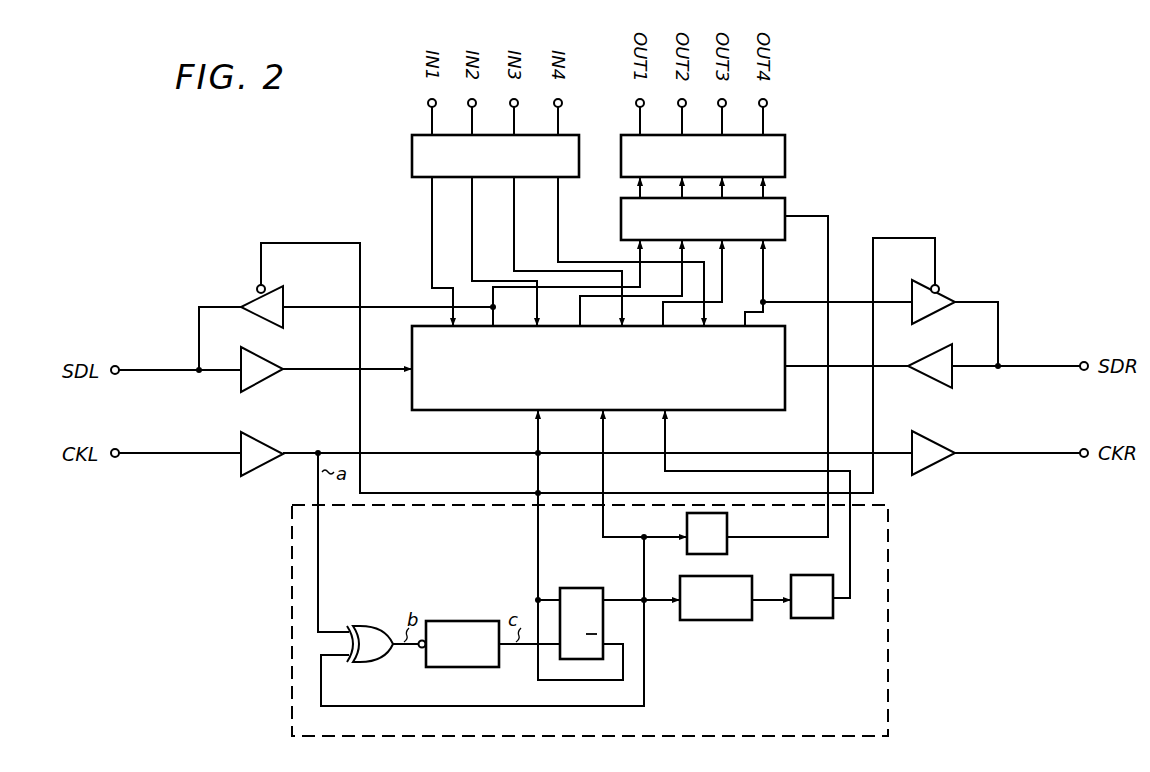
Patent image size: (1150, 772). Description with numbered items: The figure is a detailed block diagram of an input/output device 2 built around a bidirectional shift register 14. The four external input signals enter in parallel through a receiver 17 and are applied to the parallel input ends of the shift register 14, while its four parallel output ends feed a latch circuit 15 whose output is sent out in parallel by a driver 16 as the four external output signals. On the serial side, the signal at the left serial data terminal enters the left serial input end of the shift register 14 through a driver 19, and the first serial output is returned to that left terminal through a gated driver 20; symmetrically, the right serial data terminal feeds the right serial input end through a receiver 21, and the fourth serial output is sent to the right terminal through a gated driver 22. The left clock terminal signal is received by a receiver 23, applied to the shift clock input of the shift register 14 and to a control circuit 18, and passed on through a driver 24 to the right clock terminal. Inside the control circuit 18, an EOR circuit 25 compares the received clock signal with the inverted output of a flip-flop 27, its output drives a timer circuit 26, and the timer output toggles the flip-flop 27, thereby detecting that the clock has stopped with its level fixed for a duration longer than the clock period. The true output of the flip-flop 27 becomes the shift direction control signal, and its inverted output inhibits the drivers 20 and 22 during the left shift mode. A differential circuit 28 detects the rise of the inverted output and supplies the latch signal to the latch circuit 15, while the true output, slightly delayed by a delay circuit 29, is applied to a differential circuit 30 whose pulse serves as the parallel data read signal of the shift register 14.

The input/output device 2 is at (361, 200).
The bidirectional shift register 14 is at (782, 405).
The latch circuit 15 is at (785, 206).
The driver 16 is at (785, 144).
The receiver 17 is at (412, 145).
The control circuit 18 is at (292, 572).
The driver 19 is at (273, 378).
The driver with gates 20 is at (284, 301).
The receiver 21 is at (953, 372).
The driver with gates 22 is at (942, 289).
The receiver 23 is at (262, 447).
The driver 24 is at (940, 459).
The EOR circuit 25 is at (375, 631).
The timer circuit 26 is at (474, 621).
The flip-flop 27 is at (594, 588).
The differential circuit 28 is at (727, 547).
The delay circuit 29 is at (731, 621).
The differential circuit 30 is at (813, 619).